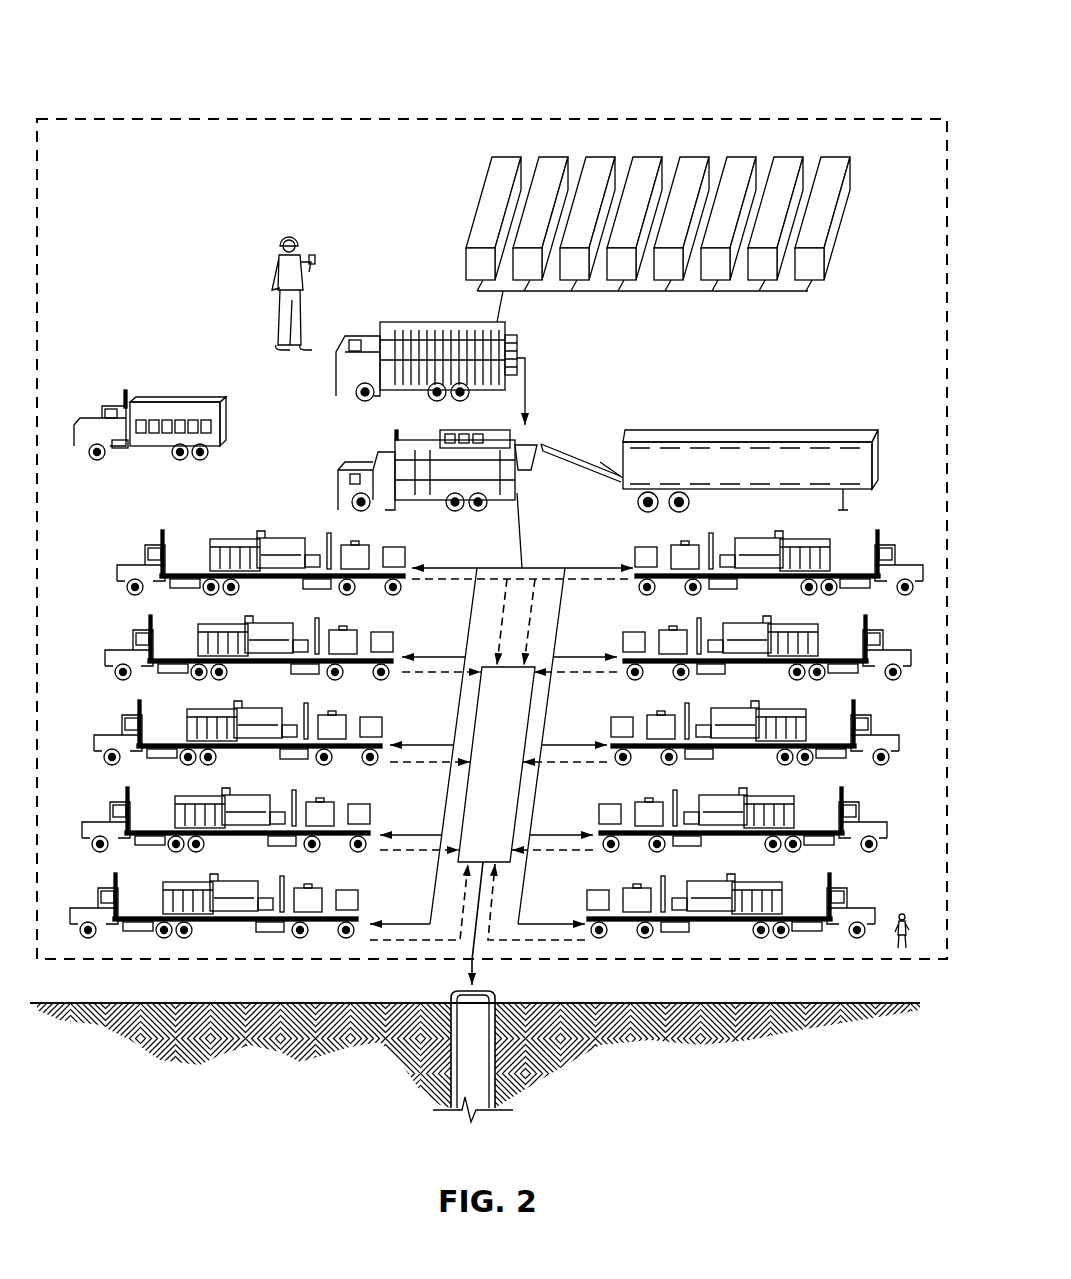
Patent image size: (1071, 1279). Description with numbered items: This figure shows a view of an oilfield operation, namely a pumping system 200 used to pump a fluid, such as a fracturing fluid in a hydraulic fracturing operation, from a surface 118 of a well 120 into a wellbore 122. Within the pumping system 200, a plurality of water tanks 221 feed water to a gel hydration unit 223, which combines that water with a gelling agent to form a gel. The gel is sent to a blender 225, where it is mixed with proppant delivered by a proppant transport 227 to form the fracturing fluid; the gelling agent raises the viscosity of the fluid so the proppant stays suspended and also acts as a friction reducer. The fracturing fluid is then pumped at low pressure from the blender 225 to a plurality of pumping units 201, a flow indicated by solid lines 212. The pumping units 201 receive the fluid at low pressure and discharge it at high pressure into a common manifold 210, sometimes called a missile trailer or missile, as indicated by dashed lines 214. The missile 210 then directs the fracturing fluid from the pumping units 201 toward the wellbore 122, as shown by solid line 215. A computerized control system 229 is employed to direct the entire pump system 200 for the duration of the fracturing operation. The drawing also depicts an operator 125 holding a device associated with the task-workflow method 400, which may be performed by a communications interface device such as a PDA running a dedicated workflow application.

The pumping system 200 is at (120, 40).
The water tanks 221 is at (507, 153).
The operator 125 is at (262, 252).
The method 400 is at (314, 254).
The gel hydration unit 223 is at (522, 347).
The blender 225 is at (397, 447).
The proppant transport 227 is at (752, 430).
The computerized control system 229 is at (200, 397).
The pumping units 201 is at (118, 568).
The solid lines 212 is at (522, 532).
The dashed lines 214 is at (468, 581).
The common manifold 210 is at (480, 740).
The solid line 215 is at (468, 972).
The surface 118 is at (192, 1003).
The well 120 is at (490, 1078).
The wellbore 122 is at (467, 1078).